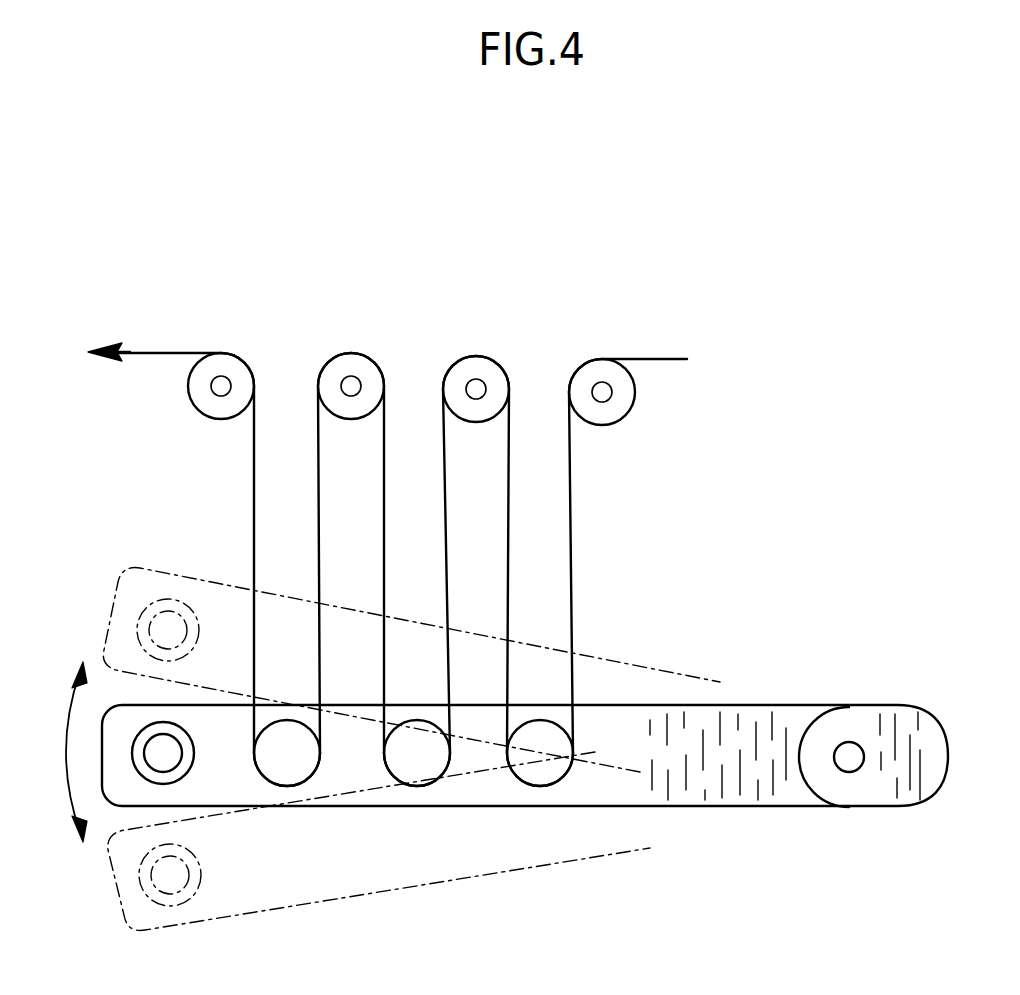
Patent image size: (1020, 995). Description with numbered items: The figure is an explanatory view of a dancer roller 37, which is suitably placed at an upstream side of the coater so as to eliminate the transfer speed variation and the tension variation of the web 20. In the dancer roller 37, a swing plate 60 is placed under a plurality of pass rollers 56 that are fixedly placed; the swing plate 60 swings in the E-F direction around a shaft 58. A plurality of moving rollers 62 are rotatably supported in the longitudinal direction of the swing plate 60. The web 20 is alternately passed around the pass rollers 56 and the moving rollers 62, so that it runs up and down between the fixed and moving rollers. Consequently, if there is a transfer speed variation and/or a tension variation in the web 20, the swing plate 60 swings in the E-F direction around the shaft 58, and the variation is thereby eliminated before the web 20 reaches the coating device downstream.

The web 20 is at (186, 352).
The dancer roller 37 is at (743, 485).
The pass rollers 56 is at (237, 378).
The shaft 58 is at (847, 750).
The swing plate 60 is at (775, 792).
The moving rollers 62 is at (290, 772).